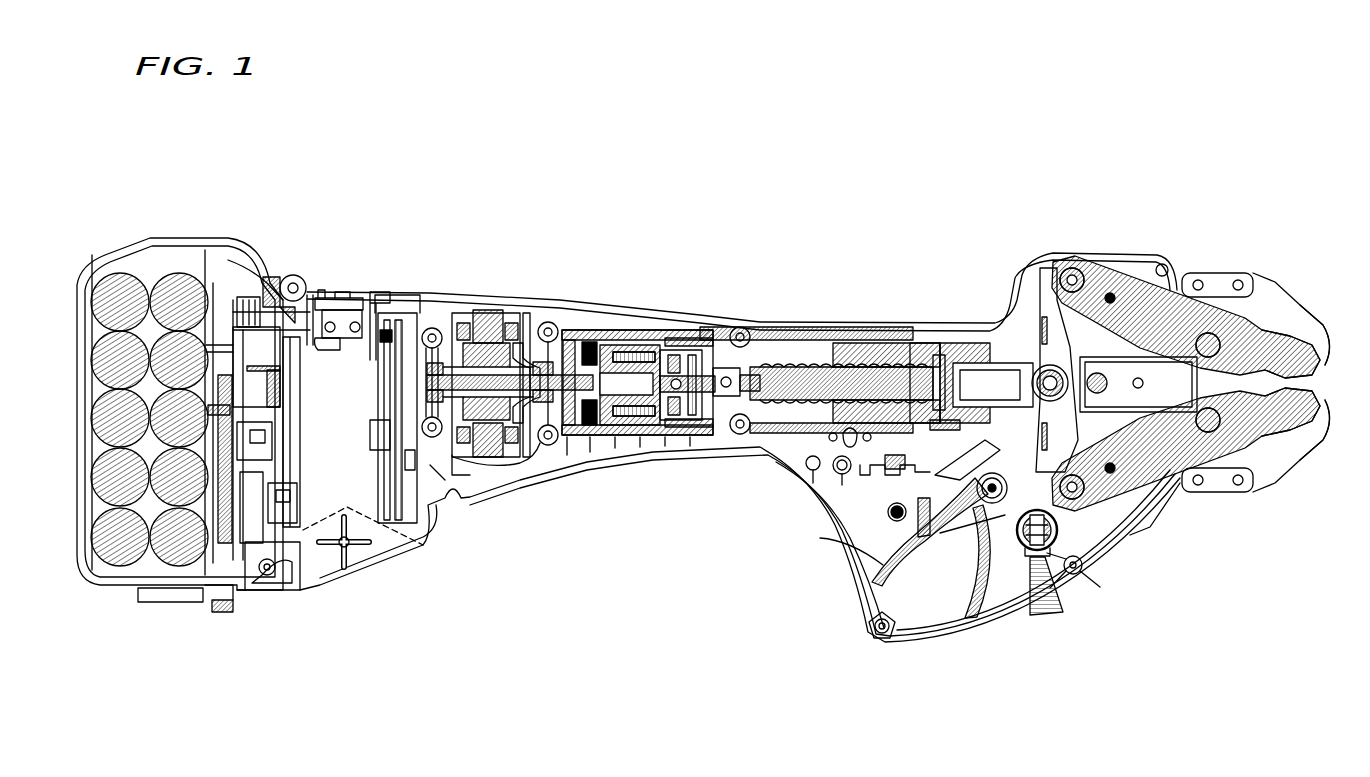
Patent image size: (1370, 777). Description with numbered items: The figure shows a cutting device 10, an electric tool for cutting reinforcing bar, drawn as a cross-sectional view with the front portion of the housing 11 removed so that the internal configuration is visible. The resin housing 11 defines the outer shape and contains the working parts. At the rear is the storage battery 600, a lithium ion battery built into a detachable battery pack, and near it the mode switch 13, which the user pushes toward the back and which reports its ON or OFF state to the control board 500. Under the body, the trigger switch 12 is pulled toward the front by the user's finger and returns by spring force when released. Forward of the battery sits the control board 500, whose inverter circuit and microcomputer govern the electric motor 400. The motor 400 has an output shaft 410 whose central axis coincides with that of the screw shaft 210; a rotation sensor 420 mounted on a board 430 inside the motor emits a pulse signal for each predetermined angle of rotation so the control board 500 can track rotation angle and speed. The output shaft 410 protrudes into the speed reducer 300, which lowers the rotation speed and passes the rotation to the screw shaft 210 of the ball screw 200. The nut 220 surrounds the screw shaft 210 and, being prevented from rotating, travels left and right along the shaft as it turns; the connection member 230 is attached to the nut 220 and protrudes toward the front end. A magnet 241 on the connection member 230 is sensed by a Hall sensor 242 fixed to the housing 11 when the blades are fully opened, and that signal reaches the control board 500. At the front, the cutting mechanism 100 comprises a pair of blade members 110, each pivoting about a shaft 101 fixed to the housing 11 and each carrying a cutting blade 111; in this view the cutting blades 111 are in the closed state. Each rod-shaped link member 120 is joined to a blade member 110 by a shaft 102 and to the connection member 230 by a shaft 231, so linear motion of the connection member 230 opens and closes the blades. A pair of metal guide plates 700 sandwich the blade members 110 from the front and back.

The cutting device 10 is at (1140, 152).
The housing 11 is at (829, 538).
The trigger switch 12 is at (928, 543).
The mode switch 13 is at (327, 300).
The cutting mechanism 100 is at (1005, 194).
The shaft 101 is at (1208, 335).
The shaft 102 is at (1080, 276).
The blade member 110 is at (1085, 272).
The cutting blade 111 is at (1280, 370).
The link member 120 is at (1047, 372).
The ball screw 200 is at (767, 262).
The screw shaft 210 is at (783, 370).
The nut 220 is at (837, 345).
The connection member 230 is at (963, 323).
The shaft 231 is at (1020, 327).
The magnet 241 is at (1018, 520).
The Hall sensor 242 is at (915, 478).
The speed reducer 300 is at (612, 350).
The electric motor 400 is at (484, 350).
The output shaft 410 is at (527, 380).
The rotation sensor 420 is at (436, 330).
The board 430 is at (457, 453).
The control board 500 is at (403, 335).
The storage battery 600 is at (116, 278).
The guide plate 700 is at (1313, 463).